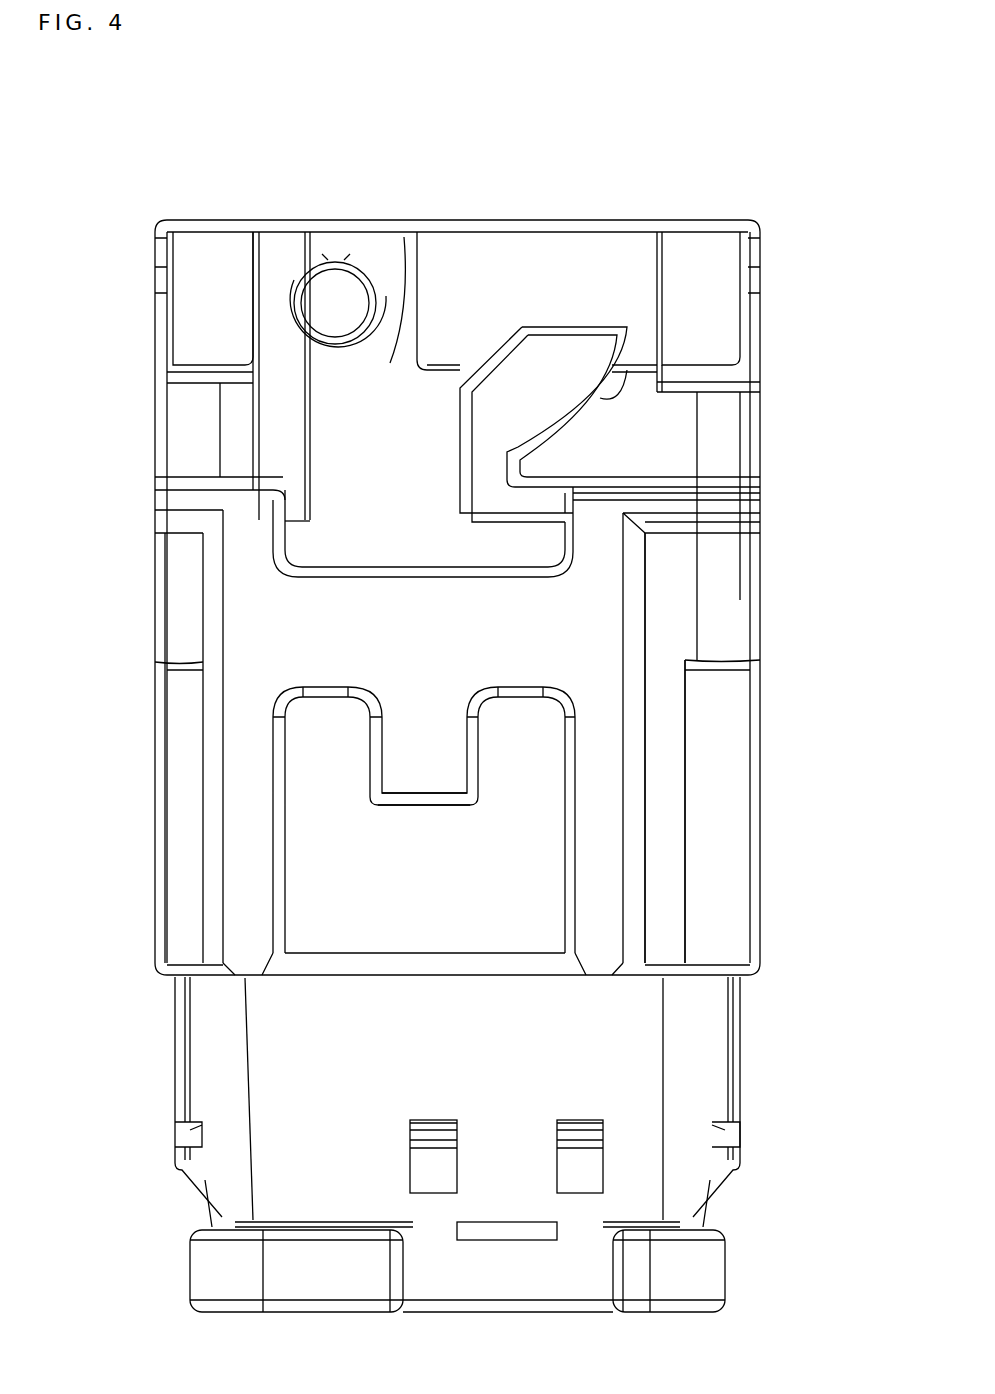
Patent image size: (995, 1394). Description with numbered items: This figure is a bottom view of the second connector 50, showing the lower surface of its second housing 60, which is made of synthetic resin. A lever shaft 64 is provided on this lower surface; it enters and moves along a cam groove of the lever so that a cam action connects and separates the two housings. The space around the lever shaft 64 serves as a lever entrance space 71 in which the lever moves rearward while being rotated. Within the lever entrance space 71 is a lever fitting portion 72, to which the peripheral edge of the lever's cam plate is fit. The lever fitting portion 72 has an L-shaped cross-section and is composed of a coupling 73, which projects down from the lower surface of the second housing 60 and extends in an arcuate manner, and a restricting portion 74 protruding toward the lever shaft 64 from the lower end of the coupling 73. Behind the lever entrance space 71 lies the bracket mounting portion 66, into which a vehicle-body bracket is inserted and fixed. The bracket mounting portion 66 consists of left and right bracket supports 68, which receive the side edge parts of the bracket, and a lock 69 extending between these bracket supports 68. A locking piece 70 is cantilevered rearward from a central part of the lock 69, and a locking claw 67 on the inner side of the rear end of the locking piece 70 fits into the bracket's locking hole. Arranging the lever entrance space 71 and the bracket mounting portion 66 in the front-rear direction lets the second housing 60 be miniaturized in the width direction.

The second connector 50 is at (463, 133).
The second housing 60 is at (435, 212).
The lever shaft 64 is at (335, 282).
The bracket mounting portion 66 is at (667, 755).
The locking claw 67 is at (423, 807).
The bracket support 68 is at (240, 843).
The lock 69 is at (418, 632).
The locking piece 70 is at (433, 750).
The lever entrance space 71 is at (388, 363).
The lever fitting portion 72 is at (583, 150).
The coupling 73 is at (632, 373).
The restricting portion 74 is at (558, 350).